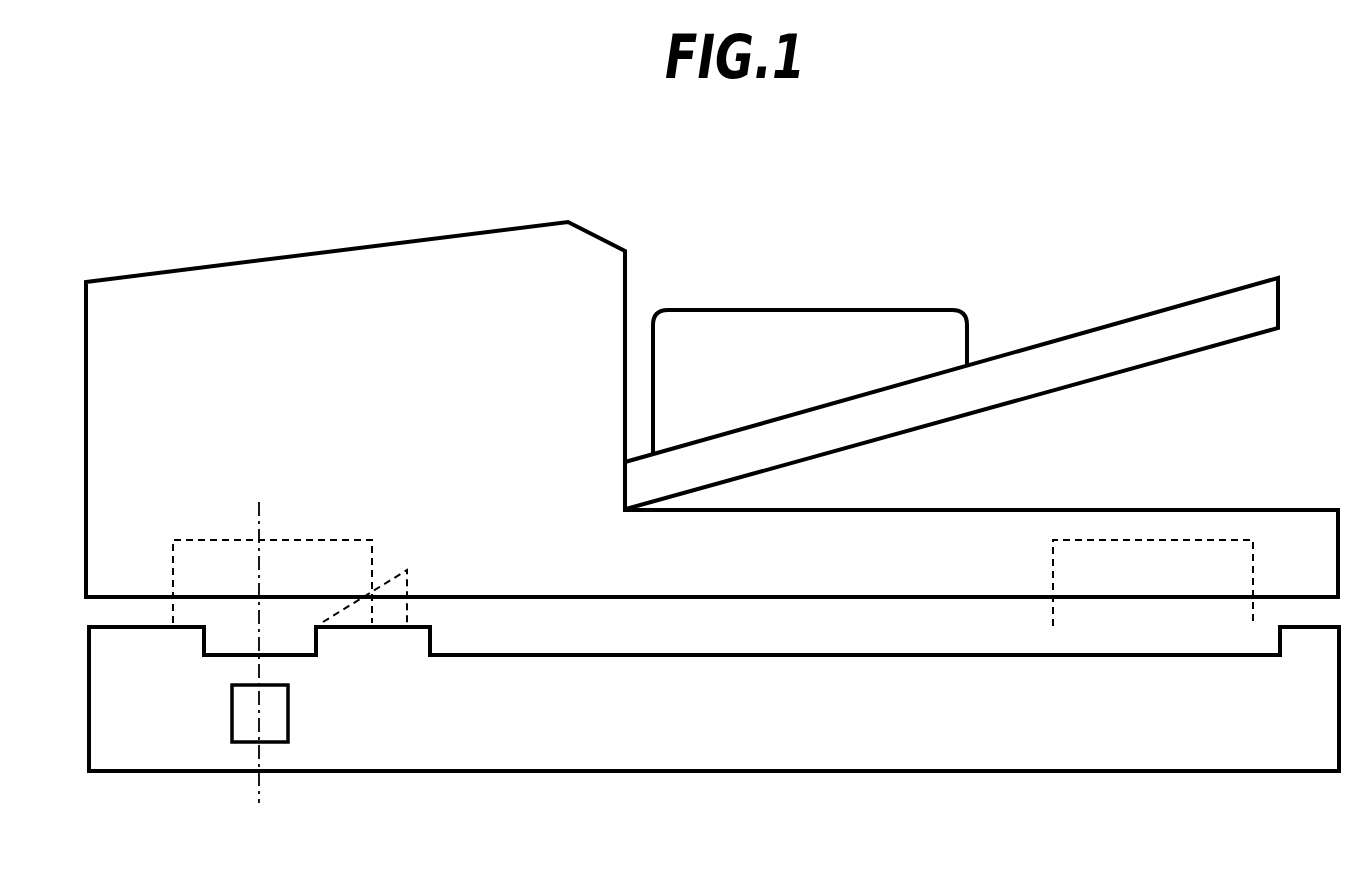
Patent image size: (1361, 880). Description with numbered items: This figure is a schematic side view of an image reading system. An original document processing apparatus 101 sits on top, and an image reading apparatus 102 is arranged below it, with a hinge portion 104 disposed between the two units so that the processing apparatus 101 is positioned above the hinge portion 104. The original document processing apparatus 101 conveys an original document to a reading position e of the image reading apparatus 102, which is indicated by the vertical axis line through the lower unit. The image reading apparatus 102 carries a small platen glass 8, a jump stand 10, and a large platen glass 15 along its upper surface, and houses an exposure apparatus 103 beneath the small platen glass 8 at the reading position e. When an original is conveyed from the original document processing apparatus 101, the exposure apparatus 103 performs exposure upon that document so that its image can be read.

The original document processing apparatus 101 is at (225, 300).
The image reading apparatus 102 is at (600, 730).
The exposure apparatus 103 is at (243, 716).
The hinge portion 104 is at (212, 548).
The small platen glass 8 is at (212, 640).
The jump stand 10 is at (387, 612).
The large platen glass 15 is at (913, 640).
The reading position e is at (263, 672).